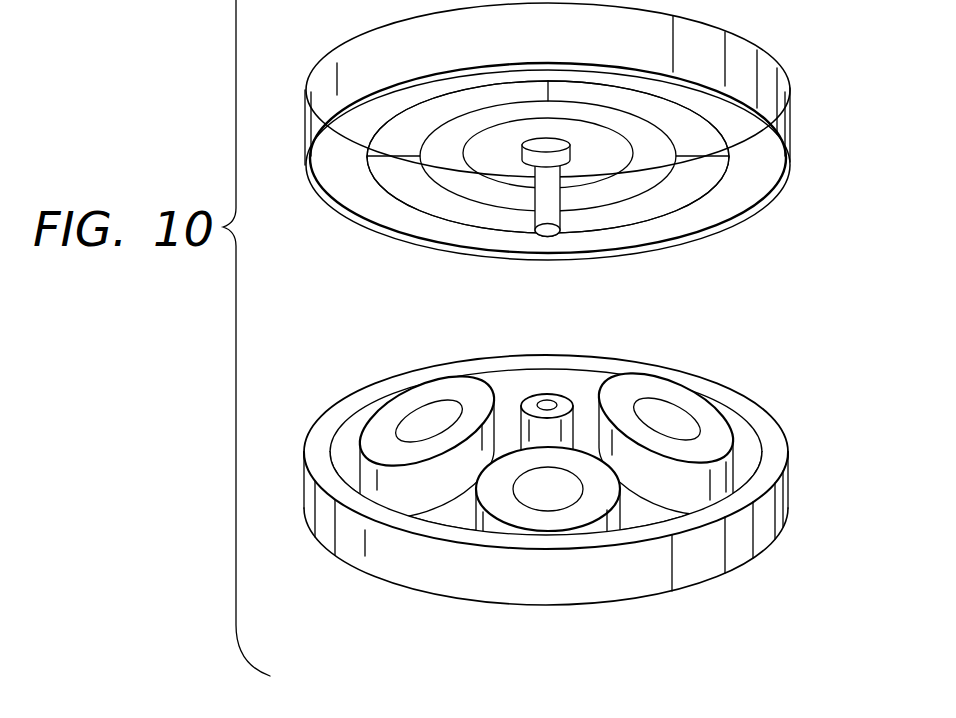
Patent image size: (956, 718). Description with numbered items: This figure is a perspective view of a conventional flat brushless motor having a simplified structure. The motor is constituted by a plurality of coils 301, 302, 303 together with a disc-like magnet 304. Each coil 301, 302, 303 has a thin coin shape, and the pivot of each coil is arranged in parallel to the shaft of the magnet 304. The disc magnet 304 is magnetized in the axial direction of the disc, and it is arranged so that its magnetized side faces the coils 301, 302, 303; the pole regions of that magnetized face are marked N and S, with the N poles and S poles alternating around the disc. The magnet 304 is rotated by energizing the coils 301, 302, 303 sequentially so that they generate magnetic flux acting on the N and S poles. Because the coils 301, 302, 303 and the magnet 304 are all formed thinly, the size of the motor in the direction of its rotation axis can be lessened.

The coil 301 is at (720, 438).
The coil 302 is at (384, 434).
The coil 303 is at (498, 496).
The disc-like magnet 304 is at (717, 183).
The north magnetic pole N is at (685, 125).
The south magnetic pole S is at (403, 128).